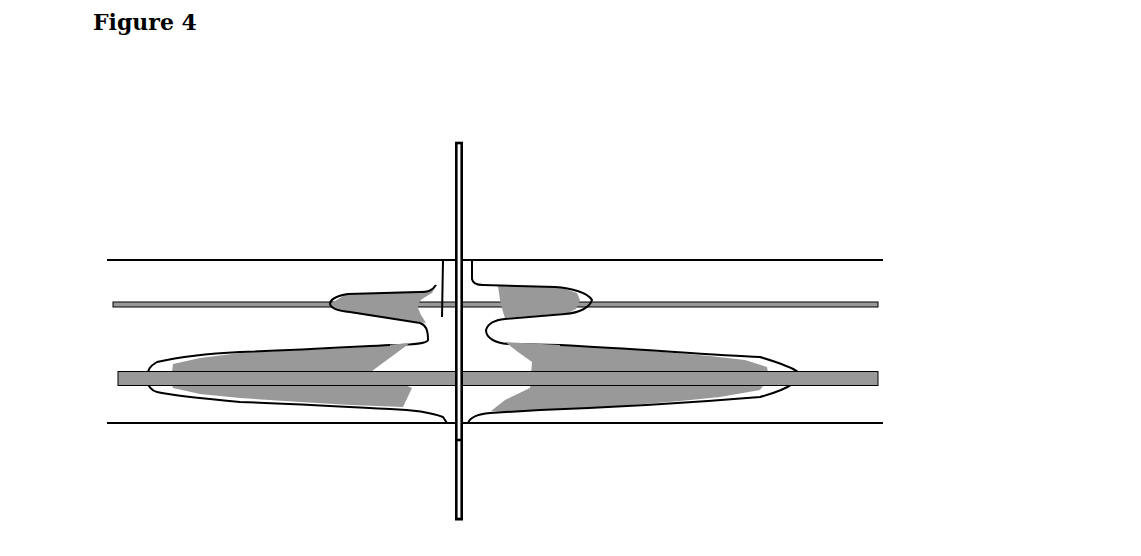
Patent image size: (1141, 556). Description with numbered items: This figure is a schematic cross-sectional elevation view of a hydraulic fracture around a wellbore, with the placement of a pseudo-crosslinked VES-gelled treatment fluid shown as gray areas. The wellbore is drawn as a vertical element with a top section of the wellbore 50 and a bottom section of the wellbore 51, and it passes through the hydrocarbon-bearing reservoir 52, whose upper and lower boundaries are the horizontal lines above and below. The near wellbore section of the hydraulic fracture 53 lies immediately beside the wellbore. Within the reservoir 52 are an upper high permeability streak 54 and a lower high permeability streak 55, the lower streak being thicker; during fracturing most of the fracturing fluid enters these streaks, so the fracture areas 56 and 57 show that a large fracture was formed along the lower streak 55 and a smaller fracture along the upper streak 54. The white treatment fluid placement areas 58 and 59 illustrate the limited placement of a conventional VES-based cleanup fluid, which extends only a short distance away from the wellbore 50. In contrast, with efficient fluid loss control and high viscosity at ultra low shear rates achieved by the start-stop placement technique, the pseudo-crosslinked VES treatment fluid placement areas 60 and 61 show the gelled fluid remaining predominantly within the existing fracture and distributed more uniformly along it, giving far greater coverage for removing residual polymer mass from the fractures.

The top section of the wellbore 50 is at (459, 131).
The bottom section of the wellbore 51 is at (448, 482).
The hydrocarbon-bearing reservoir 52 is at (403, 259).
The near wellbore section of the hydraulic fracture 53 is at (467, 333).
The upper high permeability streak 54 is at (300, 302).
The lower high permeability streak 55 is at (263, 388).
The fracture area 56 is at (590, 298).
The fracture area 57 is at (772, 362).
The treatment fluid placement area 58 is at (440, 284).
The treatment fluid placement area 59 is at (412, 360).
The pseudo-crosslinked VES treatment fluid placement area 60 is at (584, 303).
The pseudo-crosslinked VES treatment fluid placement area 61 is at (597, 357).